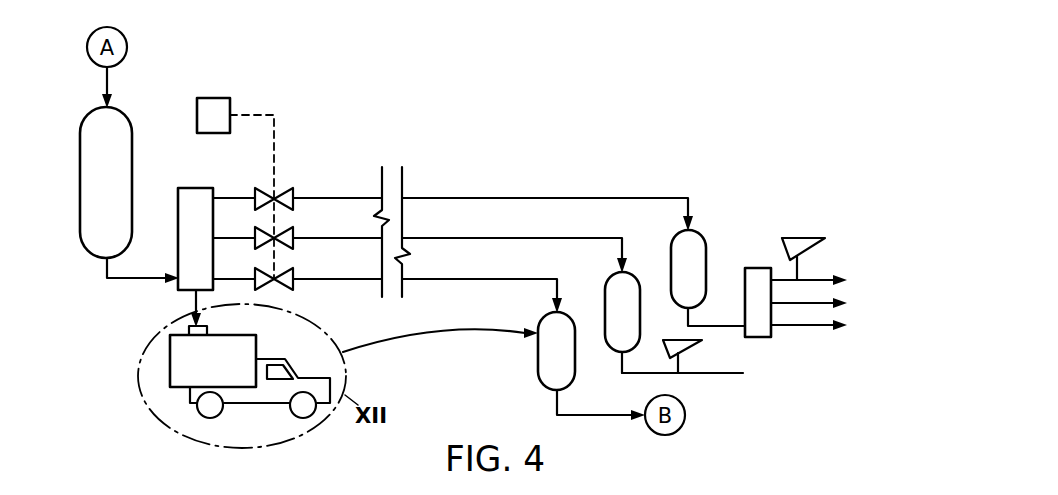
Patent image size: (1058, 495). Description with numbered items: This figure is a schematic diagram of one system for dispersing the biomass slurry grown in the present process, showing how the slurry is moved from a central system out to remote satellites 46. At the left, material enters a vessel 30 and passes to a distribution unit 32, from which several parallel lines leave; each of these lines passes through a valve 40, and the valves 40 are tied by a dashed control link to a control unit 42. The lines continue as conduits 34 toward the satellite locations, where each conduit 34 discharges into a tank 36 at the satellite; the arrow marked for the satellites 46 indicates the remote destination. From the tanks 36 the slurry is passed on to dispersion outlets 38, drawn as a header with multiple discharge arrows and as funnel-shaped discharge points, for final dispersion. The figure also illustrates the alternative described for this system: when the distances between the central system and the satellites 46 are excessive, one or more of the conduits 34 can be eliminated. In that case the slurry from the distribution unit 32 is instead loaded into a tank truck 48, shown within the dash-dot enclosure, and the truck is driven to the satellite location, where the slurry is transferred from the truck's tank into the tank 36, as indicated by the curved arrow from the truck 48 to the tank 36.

The feed tank 30 is at (80, 145).
The distribution manifold 32 is at (194, 188).
The conduits 34 is at (553, 198).
The tank 36 is at (538, 360).
The distribution outlets 38 is at (797, 339).
The valves 40 is at (278, 193).
The controller 42 is at (230, 100).
The satellites 46 is at (722, 192).
The tank truck 48 is at (255, 341).